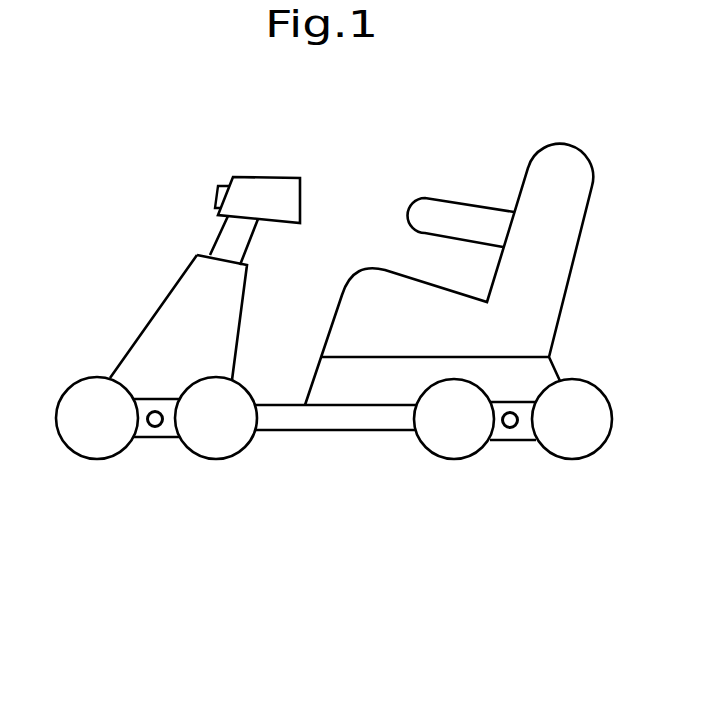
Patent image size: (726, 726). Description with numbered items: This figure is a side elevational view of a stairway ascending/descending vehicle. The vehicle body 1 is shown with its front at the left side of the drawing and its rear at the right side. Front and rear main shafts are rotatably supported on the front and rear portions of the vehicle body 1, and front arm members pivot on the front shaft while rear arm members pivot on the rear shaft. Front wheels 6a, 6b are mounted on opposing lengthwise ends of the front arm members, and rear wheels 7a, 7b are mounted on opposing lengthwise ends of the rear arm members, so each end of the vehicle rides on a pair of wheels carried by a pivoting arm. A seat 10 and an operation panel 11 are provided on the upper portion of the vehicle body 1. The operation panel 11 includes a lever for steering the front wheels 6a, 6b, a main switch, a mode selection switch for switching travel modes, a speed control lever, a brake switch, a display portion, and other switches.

The vehicle body 1 is at (337, 418).
The front wheel 6a is at (82, 432).
The front wheel 6b is at (218, 437).
The rear wheel 7a is at (455, 443).
The rear wheel 7b is at (587, 430).
The seat 10 is at (550, 261).
The operation panel 11 is at (272, 195).